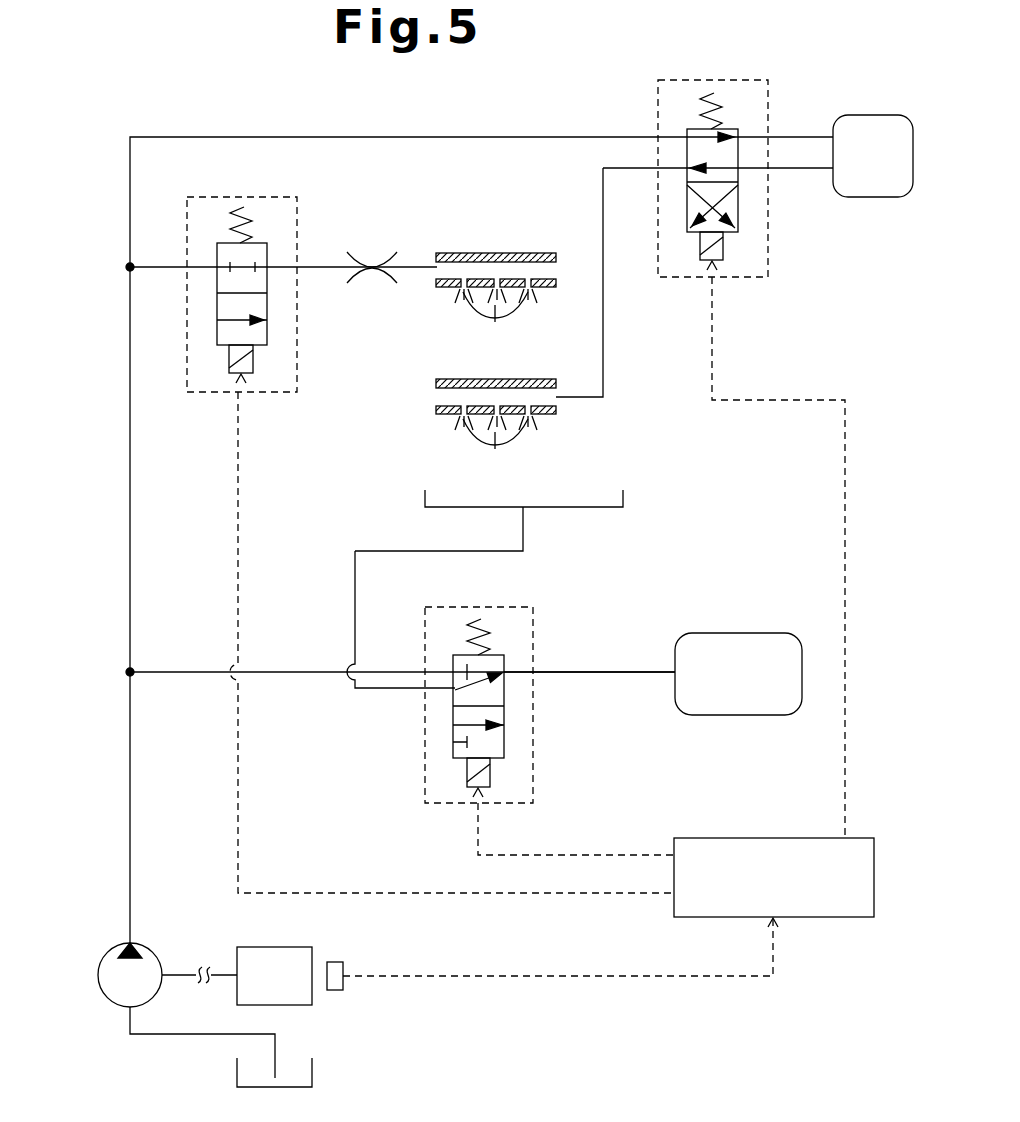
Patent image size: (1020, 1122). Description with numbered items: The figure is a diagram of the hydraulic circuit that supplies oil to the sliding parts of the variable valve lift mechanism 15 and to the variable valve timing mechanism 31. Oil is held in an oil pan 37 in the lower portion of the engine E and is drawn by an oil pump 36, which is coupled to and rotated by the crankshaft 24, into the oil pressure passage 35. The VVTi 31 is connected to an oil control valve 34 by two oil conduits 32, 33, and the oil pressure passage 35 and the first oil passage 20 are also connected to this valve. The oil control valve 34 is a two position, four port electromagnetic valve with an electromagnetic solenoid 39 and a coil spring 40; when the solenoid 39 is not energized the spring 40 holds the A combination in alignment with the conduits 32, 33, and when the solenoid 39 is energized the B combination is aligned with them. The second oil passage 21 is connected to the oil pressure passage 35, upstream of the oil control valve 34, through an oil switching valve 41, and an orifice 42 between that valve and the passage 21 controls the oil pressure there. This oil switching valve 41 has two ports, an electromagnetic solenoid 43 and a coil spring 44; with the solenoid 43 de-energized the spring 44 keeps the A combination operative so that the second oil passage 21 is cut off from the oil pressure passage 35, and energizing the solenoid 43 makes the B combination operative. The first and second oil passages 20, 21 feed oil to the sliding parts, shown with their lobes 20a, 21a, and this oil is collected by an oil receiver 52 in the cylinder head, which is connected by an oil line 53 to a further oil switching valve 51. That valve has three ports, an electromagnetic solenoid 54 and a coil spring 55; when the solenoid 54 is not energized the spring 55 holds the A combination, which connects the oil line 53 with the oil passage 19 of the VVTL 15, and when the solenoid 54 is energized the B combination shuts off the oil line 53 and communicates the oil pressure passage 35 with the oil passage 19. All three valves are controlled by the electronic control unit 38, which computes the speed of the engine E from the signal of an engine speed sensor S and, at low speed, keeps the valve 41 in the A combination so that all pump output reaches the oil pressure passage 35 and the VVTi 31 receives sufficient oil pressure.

The variable valve lift mechanism 15 is at (782, 633).
The oil passage 19 is at (597, 675).
The first oil passage 20 is at (436, 383).
The cam lobes 20a is at (496, 443).
The second oil passage 21 is at (496, 253).
The cam lobes 21a is at (496, 316).
The crankshaft 24 is at (183, 975).
The variable valve timing mechanism 31 is at (890, 115).
The oil conduit 32 is at (820, 137).
The oil conduit 33 is at (820, 170).
The oil control valve 34 is at (692, 80).
The oil pressure passage 35 is at (131, 520).
The oil pump 36 is at (98, 975).
The oil pan 37 is at (312, 1082).
The electronic control unit 38 is at (697, 838).
The electromagnetic solenoid 39 is at (724, 248).
The coil spring 40 is at (712, 100).
The oil switching valve 41 is at (206, 196).
The orifice 42 is at (372, 283).
The electromagnetic solenoid 43 is at (252, 370).
The coil spring 44 is at (255, 215).
The oil switching valve 51 is at (533, 607).
The oil receiver 52 is at (623, 497).
The oil line 53 is at (355, 568).
The electromagnetic solenoid 54 is at (468, 787).
The coil spring 55 is at (470, 623).
The engine E is at (290, 947).
The engine speed sensor S is at (336, 990).
The A combination A is at (690, 130).
The B combination B is at (692, 222).